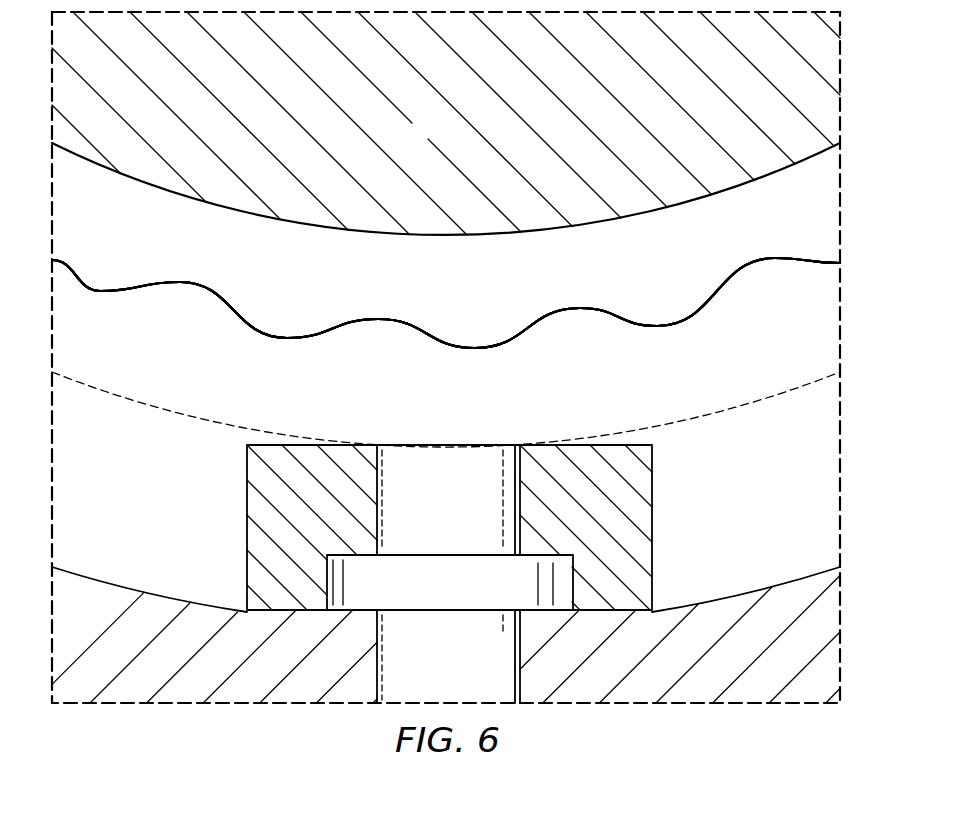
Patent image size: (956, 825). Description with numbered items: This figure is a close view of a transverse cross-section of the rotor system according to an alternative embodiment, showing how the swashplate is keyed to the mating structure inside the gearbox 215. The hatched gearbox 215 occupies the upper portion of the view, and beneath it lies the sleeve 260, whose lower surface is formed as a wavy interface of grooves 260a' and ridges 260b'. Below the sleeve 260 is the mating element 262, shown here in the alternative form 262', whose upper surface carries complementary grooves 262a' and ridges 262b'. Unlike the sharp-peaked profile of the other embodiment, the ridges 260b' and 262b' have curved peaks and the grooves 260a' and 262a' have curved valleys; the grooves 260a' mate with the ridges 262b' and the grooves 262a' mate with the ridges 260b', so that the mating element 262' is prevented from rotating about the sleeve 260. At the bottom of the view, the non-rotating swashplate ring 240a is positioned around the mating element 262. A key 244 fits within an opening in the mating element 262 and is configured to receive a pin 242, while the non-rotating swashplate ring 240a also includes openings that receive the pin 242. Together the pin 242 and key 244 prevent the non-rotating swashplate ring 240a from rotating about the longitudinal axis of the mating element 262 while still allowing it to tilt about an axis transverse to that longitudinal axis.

The gearbox 215 is at (464, 133).
The sleeve 260 is at (538, 275).
The mating element 262 is at (446, 409).
The grooves 260a' is at (446, 271).
The ridges 260b' is at (446, 279).
The grooves 262a' is at (446, 342).
The ridges 262b' is at (446, 326).
The mating element 262' is at (446, 542).
The key 244 is at (334, 503).
The pin 242 is at (470, 513).
The non-rotating swashplate ring 240a is at (178, 653).